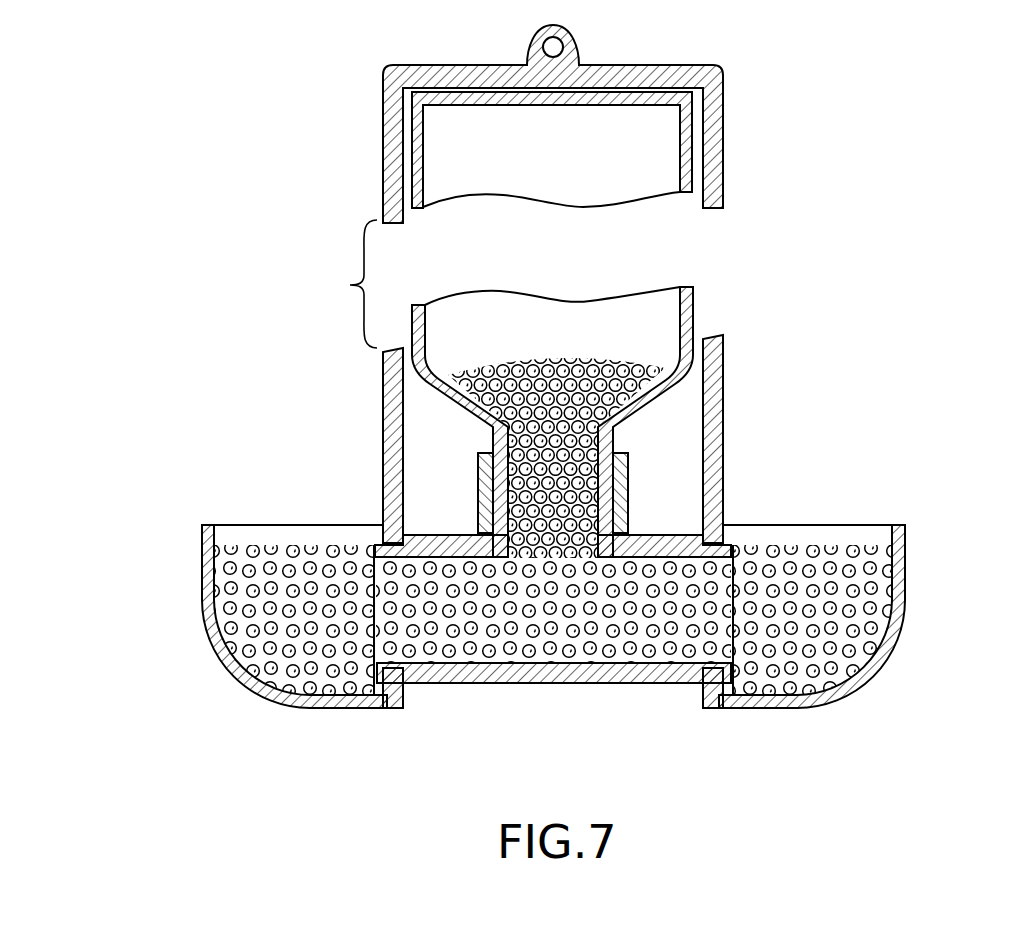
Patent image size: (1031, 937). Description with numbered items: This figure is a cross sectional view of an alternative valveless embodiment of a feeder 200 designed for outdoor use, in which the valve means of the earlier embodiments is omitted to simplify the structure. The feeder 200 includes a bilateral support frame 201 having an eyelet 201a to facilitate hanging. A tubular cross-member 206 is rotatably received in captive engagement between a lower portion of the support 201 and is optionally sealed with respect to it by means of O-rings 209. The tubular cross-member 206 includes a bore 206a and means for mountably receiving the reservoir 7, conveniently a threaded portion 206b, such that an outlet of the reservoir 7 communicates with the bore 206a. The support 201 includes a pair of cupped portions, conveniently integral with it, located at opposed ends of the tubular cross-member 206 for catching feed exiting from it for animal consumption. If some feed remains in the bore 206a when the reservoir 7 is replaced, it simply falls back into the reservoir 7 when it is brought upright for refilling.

The feeder 200 is at (568, 400).
The bilateral support frame 201 is at (392, 422).
The eyelet 201a is at (556, 48).
The reservoir 7 is at (688, 152).
The tubular cross-member 206 is at (527, 684).
The bore 206a is at (532, 662).
The threaded portion 206b is at (628, 495).
The O-rings 209 is at (397, 676).